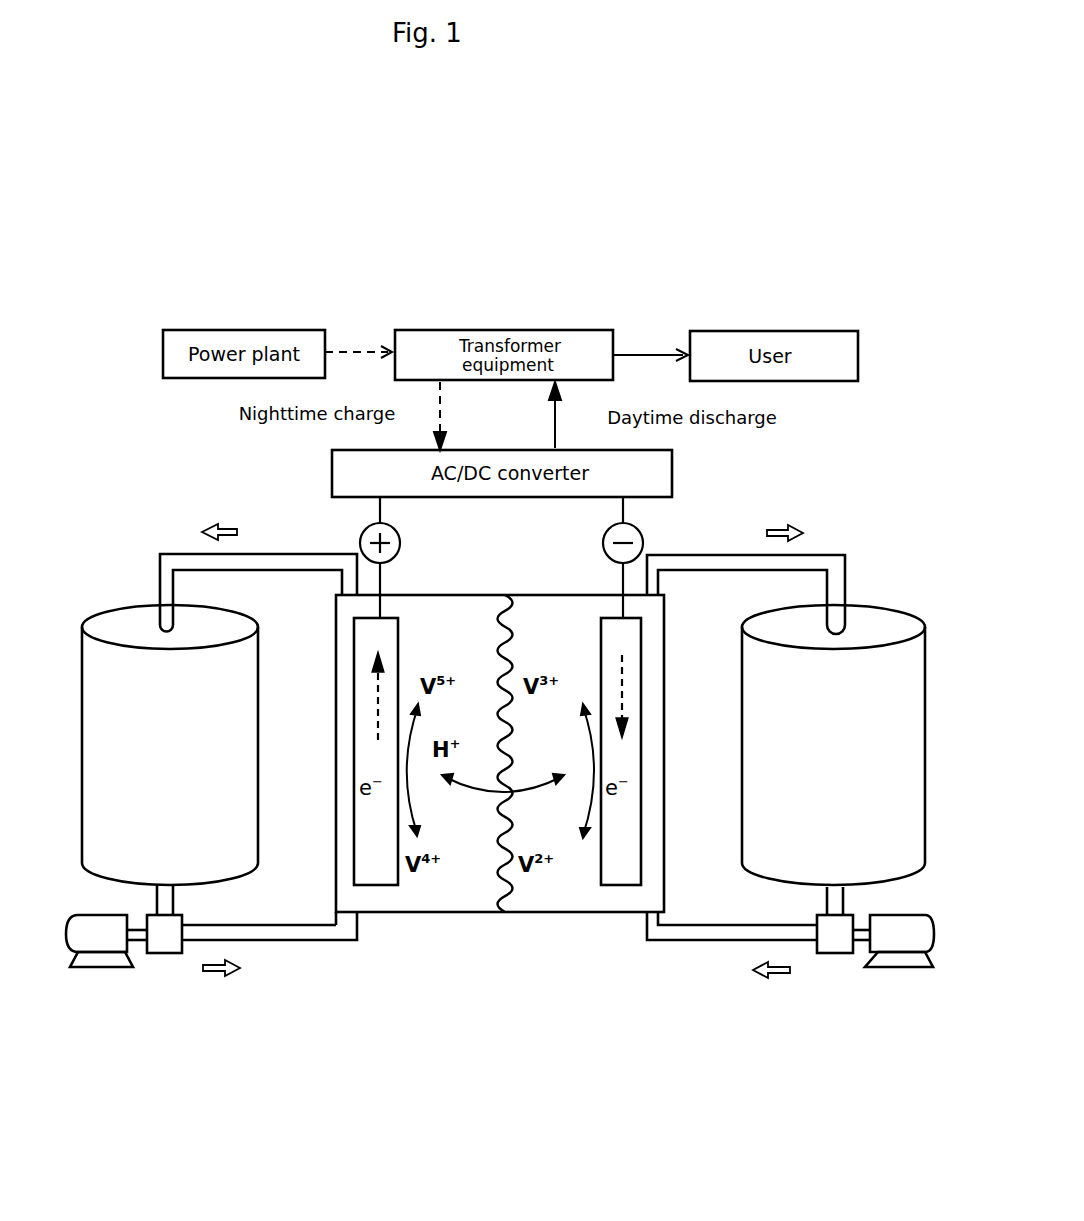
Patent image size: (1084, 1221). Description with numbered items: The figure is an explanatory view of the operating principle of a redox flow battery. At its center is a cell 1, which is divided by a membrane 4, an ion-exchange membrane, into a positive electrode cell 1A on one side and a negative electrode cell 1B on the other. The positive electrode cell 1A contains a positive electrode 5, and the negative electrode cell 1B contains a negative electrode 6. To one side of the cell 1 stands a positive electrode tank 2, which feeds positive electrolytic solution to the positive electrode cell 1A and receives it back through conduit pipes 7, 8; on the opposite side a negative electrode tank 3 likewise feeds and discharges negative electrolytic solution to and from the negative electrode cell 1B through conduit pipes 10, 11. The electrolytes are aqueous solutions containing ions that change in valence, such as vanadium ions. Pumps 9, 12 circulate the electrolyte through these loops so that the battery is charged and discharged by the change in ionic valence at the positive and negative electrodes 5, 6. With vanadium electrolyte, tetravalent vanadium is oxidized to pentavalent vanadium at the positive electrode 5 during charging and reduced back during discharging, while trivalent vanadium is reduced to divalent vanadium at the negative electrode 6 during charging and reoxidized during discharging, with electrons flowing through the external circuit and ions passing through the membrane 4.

The cell 1 is at (464, 580).
The positive electrode cell 1A is at (433, 912).
The negative electrode cell 1B is at (570, 912).
The positive electrode tank 2 is at (115, 628).
The negative electrode tank 3 is at (888, 618).
The membrane 4 is at (490, 903).
The positive electrode 5 is at (378, 885).
The negative electrode 6 is at (620, 885).
The conduit pipe 7 is at (288, 940).
The conduit pipe 8 is at (178, 553).
The pump 9 is at (110, 967).
The conduit pipe 10 is at (712, 942).
The conduit pipe 11 is at (828, 553).
The pump 12 is at (893, 967).